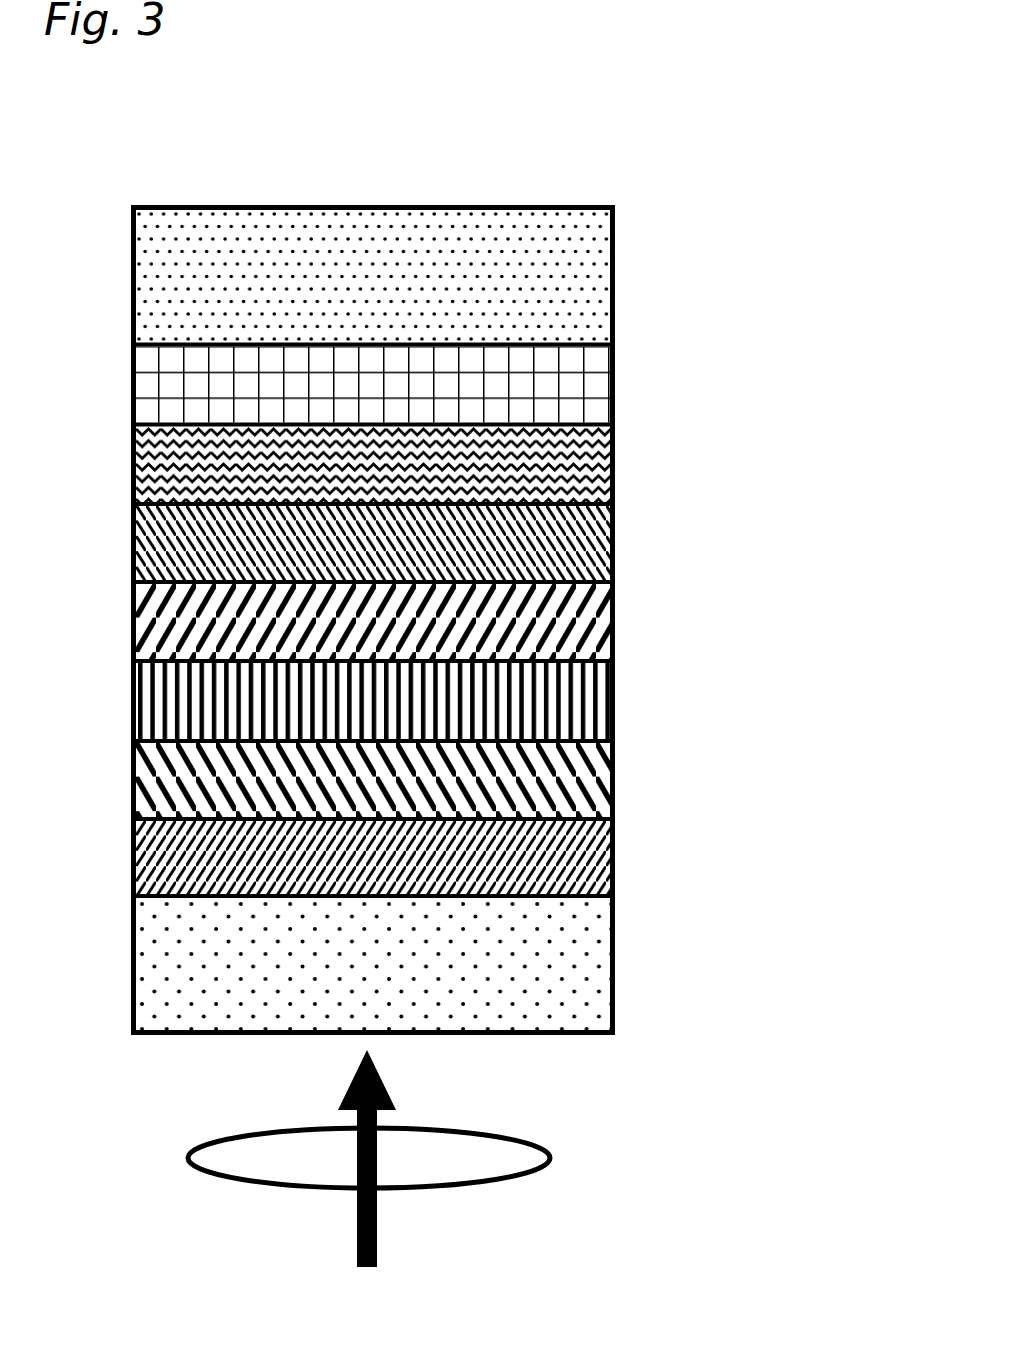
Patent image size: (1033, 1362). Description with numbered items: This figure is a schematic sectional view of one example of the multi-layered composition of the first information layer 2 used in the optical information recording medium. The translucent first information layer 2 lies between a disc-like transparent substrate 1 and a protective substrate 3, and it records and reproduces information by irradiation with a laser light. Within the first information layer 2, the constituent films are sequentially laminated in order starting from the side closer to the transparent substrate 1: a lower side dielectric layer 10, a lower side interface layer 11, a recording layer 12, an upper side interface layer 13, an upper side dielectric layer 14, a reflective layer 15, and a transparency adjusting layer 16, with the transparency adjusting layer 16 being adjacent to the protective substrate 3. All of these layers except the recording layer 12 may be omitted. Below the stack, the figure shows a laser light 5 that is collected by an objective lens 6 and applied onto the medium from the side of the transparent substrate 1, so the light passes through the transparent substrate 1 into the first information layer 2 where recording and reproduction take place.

The transparent substrate 1 is at (612, 952).
The first information layer 2 is at (845, 873).
The protective substrate 3 is at (612, 283).
The lower side dielectric layer 10 is at (612, 853).
The lower side interface layer 11 is at (612, 775).
The recording layer 12 is at (612, 697).
The upper side interface layer 13 is at (612, 618).
The upper side dielectric layer 14 is at (612, 540).
The reflective layer 15 is at (612, 462).
The transparency adjusting layer 16 is at (612, 383).
The laser light 5 is at (376, 1228).
The objective lens 6 is at (550, 1157).